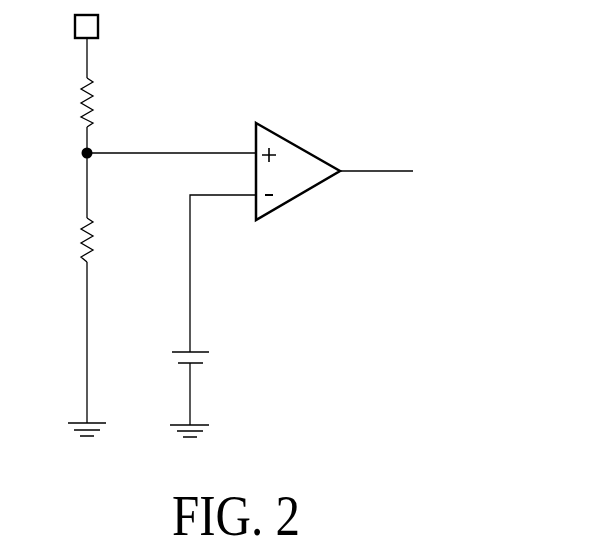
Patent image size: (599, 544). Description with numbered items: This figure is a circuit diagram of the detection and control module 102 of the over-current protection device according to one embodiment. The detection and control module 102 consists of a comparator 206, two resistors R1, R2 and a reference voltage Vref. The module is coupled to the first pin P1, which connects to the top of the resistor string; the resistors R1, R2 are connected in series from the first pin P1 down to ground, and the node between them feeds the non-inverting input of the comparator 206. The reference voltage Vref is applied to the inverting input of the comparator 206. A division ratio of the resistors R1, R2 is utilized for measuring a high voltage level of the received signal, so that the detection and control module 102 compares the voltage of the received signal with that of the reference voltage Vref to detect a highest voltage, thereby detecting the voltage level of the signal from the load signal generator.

The detection and control module 102 is at (462, 78).
The comparator 206 is at (300, 143).
The first pin P1 is at (75, 22).
The resistor R1 is at (65, 102).
The resistor R2 is at (64, 240).
The reference voltage Vref is at (220, 357).